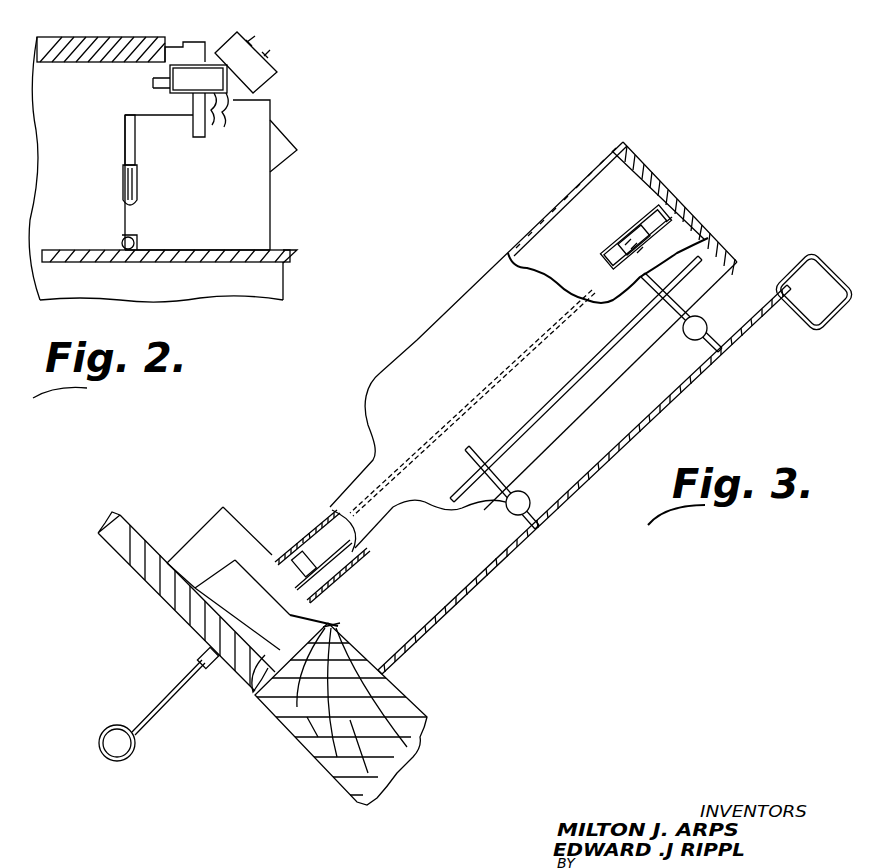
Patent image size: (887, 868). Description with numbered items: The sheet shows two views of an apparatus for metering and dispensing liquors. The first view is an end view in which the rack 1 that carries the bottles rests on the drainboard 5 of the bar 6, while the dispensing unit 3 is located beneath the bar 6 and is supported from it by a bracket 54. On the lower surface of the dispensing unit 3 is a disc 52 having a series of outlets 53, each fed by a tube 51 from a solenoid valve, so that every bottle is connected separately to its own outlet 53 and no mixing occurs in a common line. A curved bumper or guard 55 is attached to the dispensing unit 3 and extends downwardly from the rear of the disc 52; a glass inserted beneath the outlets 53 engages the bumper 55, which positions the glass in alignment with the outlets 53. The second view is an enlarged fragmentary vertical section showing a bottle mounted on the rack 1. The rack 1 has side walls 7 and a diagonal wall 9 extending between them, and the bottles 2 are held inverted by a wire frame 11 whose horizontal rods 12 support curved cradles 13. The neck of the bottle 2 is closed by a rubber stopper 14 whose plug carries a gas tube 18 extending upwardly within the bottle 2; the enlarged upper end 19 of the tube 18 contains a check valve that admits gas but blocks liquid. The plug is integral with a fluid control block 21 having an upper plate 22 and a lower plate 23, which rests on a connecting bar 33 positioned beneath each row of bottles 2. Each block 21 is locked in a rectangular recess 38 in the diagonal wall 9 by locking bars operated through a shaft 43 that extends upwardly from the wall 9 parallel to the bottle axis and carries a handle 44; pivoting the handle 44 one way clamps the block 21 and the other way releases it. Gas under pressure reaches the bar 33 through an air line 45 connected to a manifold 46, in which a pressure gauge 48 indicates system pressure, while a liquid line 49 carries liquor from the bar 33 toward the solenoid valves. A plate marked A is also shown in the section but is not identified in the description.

In FIG. 2, the rack 1 is at (283, 100).
In FIG. 2, the bottles 2 is at (285, 150).
In FIG. 3, the bottles 2 is at (625, 143).
In FIG. 2, the dispensing unit 3 is at (180, 82).
In FIG. 2, the drainboard 5 is at (240, 263).
In FIG. 2, the bar 6 is at (100, 43).
In FIG. 2, the side walls 7 is at (257, 210).
In FIG. 3, the diagonal wall 9 is at (357, 790).
In FIG. 3, the wire frame 11 is at (593, 481).
In FIG. 3, the horizontal rods 12 is at (687, 333).
In FIG. 3, the curved cradles 13 is at (570, 378).
In FIG. 3, the rubber stopper 14 is at (292, 563).
In FIG. 3, the tube 18 is at (498, 378).
In FIG. 3, the upper end of tube 19 is at (612, 249).
In FIG. 3, the fluid control block 21 is at (223, 557).
In FIG. 3, the upper plate 22 is at (642, 228).
In FIG. 3, the lower plate 23 is at (255, 690).
In FIG. 3, the connecting bar 33 is at (183, 613).
In FIG. 3, the recess 38 is at (235, 520).
In FIG. 3, the shaft 43 is at (668, 390).
In FIG. 3, the handle 44 is at (822, 270).
In FIG. 3, the air line 45 is at (182, 680).
In FIG. 2, the manifold 46 is at (125, 240).
In FIG. 3, the manifold 46 is at (130, 760).
In FIG. 2, the pressure gauge 48 is at (125, 137).
In FIG. 3, the liquid line 49 is at (210, 667).
In FIG. 2, the tube 51 is at (157, 77).
In FIG. 2, the disc 52 is at (233, 103).
In FIG. 2, the outlets 53 is at (215, 120).
In FIG. 2, the bracket 54 is at (167, 43).
In FIG. 2, the bumper 55 is at (193, 130).
In FIG. 2, the plate A is at (253, 45).